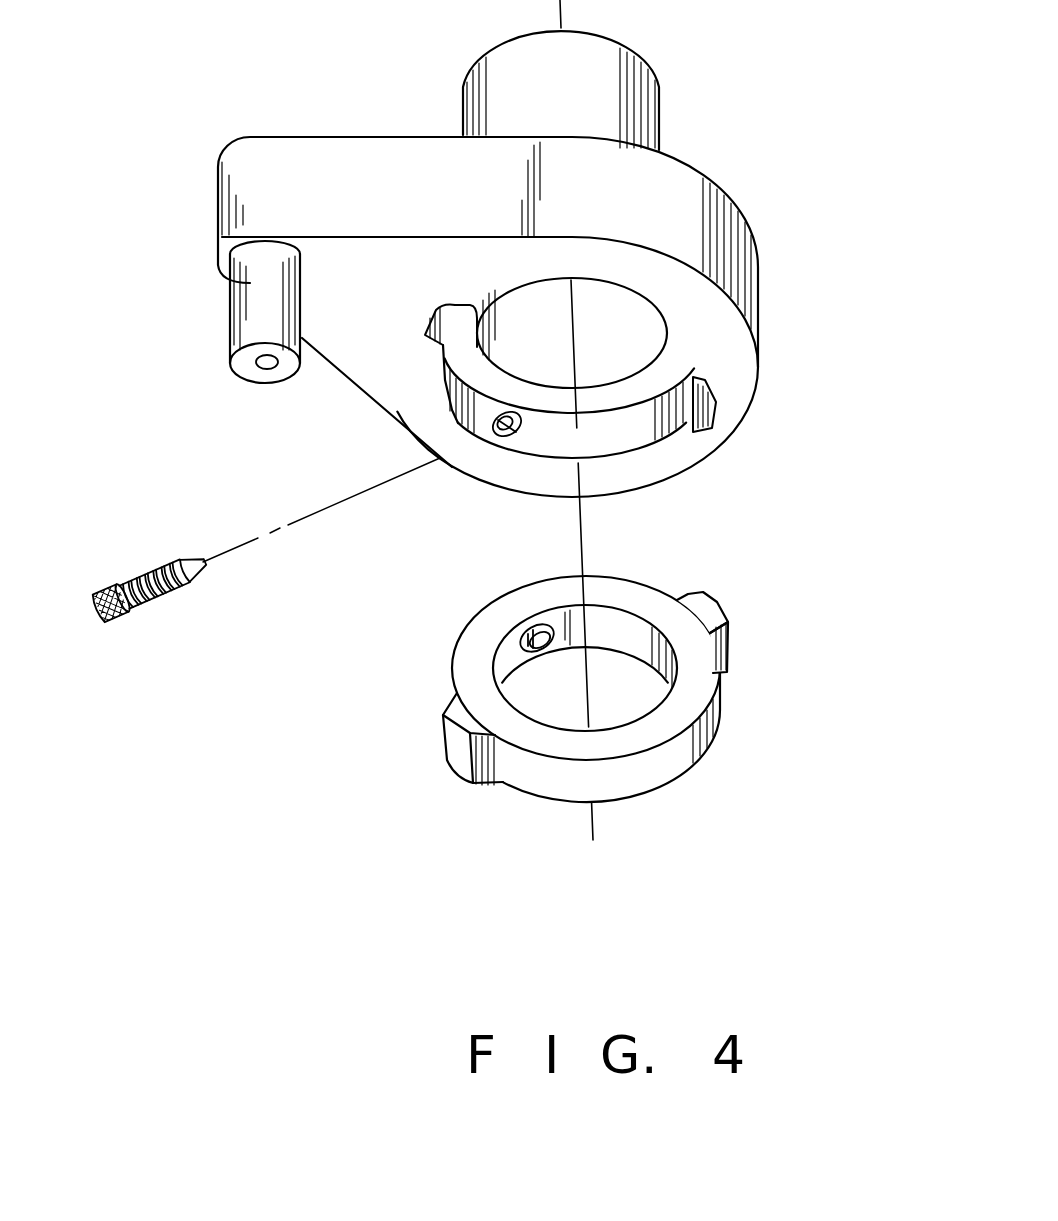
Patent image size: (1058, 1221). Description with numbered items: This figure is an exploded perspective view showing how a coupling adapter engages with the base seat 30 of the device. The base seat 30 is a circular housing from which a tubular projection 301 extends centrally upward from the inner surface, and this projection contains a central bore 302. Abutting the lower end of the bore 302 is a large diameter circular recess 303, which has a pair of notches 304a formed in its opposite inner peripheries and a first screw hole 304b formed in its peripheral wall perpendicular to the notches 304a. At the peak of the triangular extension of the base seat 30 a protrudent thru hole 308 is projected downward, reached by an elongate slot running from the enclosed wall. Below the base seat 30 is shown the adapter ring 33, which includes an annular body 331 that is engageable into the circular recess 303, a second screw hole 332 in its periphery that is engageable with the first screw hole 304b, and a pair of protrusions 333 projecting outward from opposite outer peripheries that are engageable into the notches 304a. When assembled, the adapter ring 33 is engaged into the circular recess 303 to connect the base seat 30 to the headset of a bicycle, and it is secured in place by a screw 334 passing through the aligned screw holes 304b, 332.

The base seat 30 is at (707, 230).
The tubular projection 301 is at (620, 107).
The central bore 302 is at (625, 323).
The circular recess 303 is at (633, 418).
The notches 304a is at (716, 402).
The first screw hole 304b is at (440, 404).
The protrudent thru hole 308 is at (250, 282).
The adapter ring 33 is at (713, 597).
The annular body 331 is at (645, 682).
The second screw hole 332 is at (530, 637).
The protrusions 333 is at (445, 716).
The screw 334 is at (162, 560).